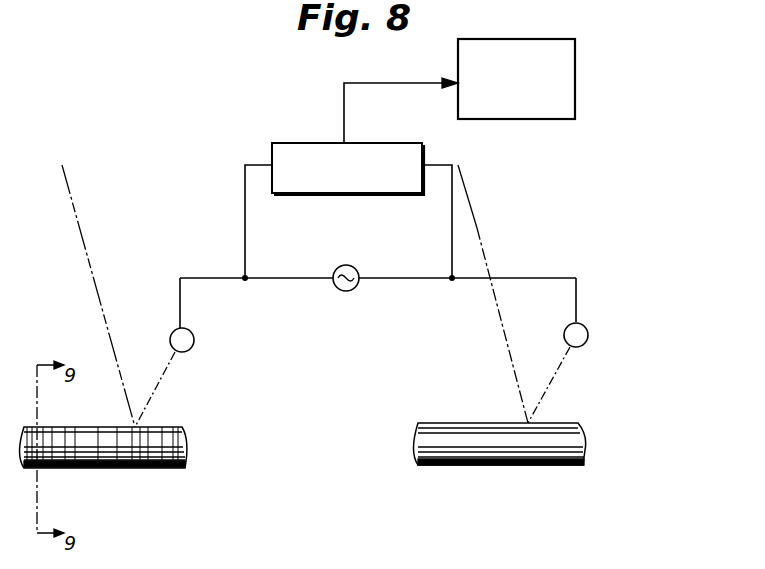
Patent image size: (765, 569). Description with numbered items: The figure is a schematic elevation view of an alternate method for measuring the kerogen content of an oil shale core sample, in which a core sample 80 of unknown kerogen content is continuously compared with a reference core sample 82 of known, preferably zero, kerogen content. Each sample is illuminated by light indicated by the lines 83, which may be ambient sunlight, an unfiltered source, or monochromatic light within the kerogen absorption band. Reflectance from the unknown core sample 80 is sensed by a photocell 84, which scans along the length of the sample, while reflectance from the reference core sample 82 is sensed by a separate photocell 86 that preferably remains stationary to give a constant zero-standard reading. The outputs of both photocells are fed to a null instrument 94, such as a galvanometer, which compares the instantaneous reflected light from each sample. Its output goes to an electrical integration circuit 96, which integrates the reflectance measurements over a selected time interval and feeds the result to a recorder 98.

The core sample 80 is at (160, 458).
The reference core sample 82 is at (518, 450).
The lines 83 is at (88, 250).
The photocell 84 is at (194, 342).
The photocell 86 is at (588, 335).
The null instrument 94 is at (352, 290).
The integration circuit 96 is at (378, 143).
The recorder 98 is at (575, 77).